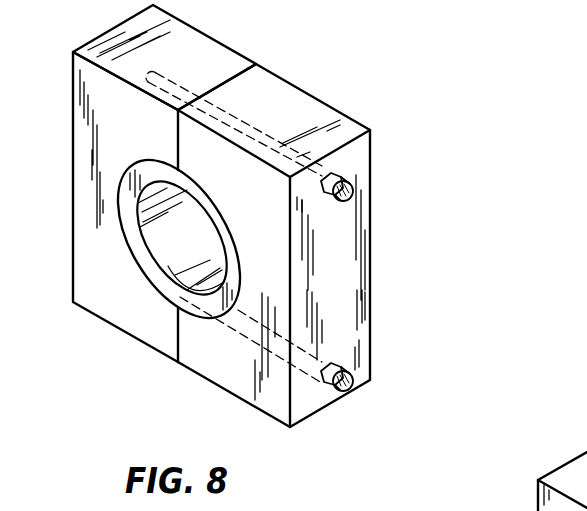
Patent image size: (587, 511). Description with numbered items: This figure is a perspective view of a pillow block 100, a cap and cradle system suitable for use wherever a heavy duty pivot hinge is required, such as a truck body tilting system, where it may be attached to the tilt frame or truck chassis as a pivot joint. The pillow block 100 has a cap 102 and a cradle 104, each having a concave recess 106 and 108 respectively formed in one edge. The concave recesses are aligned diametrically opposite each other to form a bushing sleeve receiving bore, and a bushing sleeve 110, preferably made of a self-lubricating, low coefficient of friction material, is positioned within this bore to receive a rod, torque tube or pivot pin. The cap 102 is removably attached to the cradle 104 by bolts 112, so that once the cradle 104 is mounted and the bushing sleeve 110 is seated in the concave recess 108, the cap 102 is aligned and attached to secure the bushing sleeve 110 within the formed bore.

The pillow block 100 is at (302, 230).
The cap 102 is at (310, 416).
The cradle 104 is at (157, 351).
The concave recess 106 is at (221, 211).
The concave recess 108 is at (128, 238).
The bushing sleeve 110 is at (153, 277).
The bolts 112 is at (352, 182).